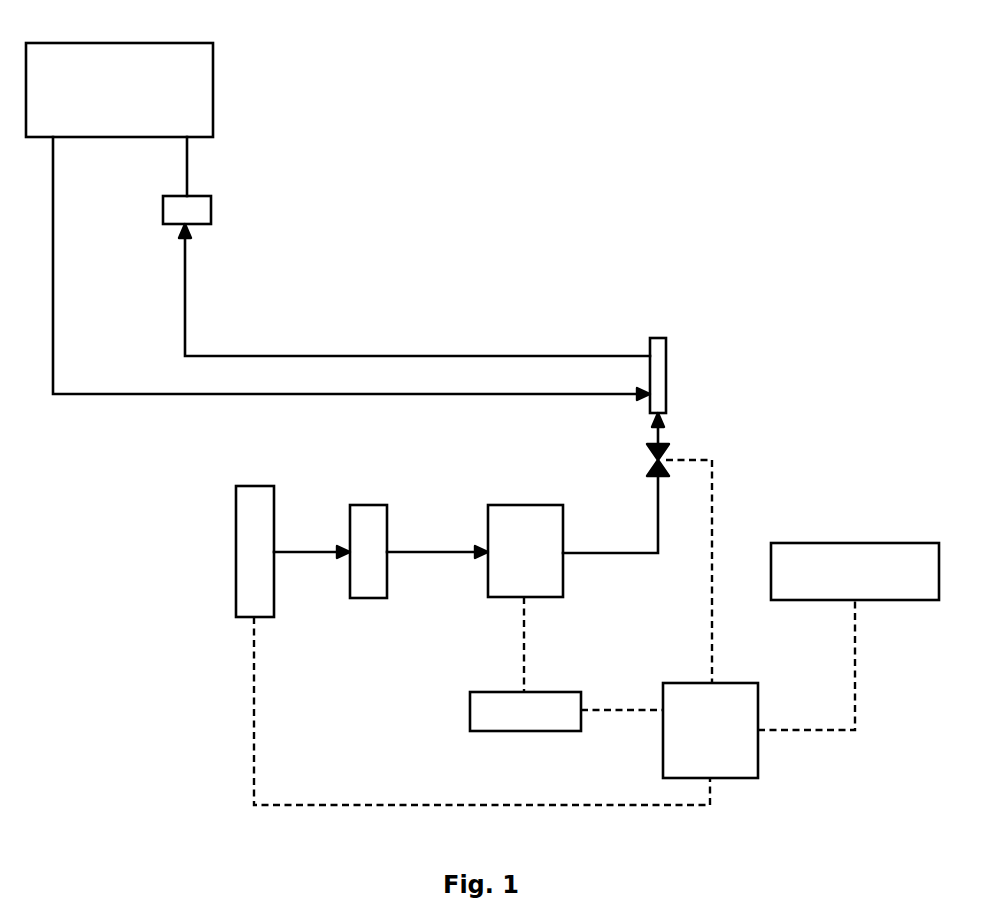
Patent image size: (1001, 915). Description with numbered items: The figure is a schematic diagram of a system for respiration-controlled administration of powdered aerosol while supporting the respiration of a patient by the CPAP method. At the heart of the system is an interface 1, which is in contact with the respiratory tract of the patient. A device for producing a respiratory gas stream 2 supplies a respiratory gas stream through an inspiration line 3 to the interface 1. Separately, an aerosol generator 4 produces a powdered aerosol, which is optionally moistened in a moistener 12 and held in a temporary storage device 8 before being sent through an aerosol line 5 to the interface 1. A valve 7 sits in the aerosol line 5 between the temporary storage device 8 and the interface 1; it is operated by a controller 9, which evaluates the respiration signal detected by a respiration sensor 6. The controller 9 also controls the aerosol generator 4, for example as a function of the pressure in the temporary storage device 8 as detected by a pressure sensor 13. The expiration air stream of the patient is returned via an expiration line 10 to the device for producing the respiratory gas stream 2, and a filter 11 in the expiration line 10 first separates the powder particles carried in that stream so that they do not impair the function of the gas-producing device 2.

The interface 1 is at (666, 373).
The device for producing a respiratory gas stream 2 is at (213, 95).
The inspiration line 3 is at (147, 394).
The aerosol generator 4 is at (274, 489).
The aerosol line 5 is at (648, 553).
The respiration sensor 6 is at (920, 600).
The valve 7 is at (647, 446).
The temporary storage device 8 is at (503, 597).
The controller 9 is at (743, 773).
The expiration line 10 is at (383, 356).
The filter 11 is at (211, 208).
The moistener 12 is at (387, 507).
The pressure sensor 13 is at (532, 731).